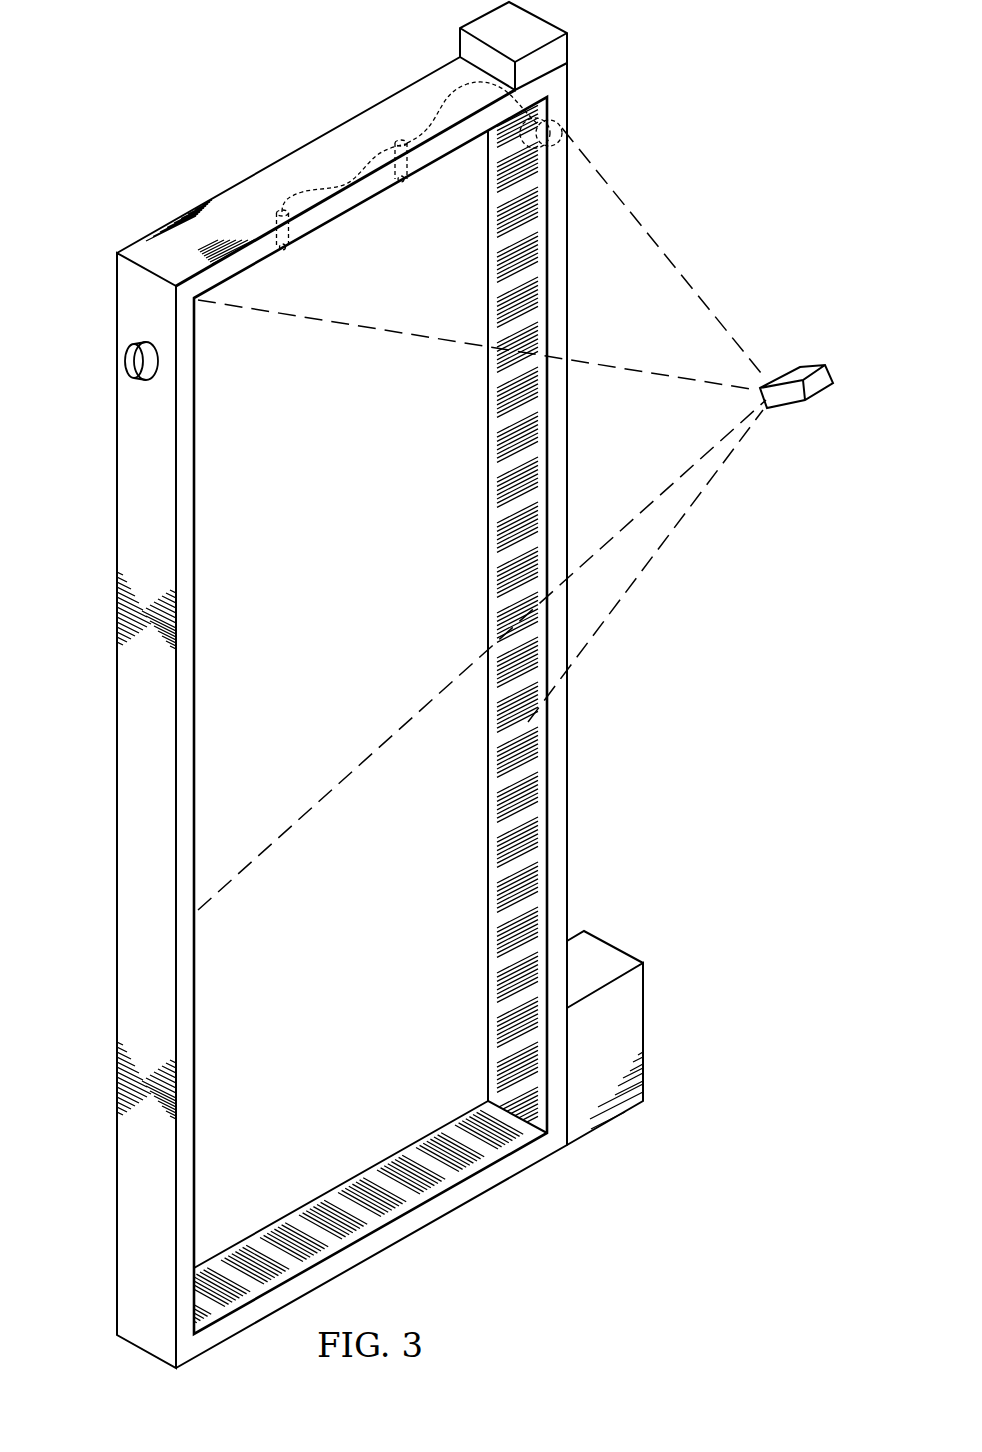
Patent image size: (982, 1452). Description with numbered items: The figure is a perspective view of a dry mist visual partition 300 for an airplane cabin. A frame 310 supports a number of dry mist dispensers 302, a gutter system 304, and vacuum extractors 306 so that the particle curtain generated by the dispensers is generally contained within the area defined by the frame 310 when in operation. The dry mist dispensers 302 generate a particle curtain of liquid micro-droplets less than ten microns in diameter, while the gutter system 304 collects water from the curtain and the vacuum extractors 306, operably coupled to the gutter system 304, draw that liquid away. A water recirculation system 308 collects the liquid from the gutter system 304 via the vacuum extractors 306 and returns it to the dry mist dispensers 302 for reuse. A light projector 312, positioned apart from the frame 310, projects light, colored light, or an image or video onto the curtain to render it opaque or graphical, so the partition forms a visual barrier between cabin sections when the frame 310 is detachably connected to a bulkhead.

The dry mist visual partition 300 is at (254, 85).
The dry mist dispensers 302 is at (400, 139).
The gutter system 304 is at (378, 1181).
The vacuum extractors 306 is at (561, 124).
The water recirculation system 308 is at (644, 1031).
The frame 310 is at (117, 799).
The light projector 312 is at (800, 366).